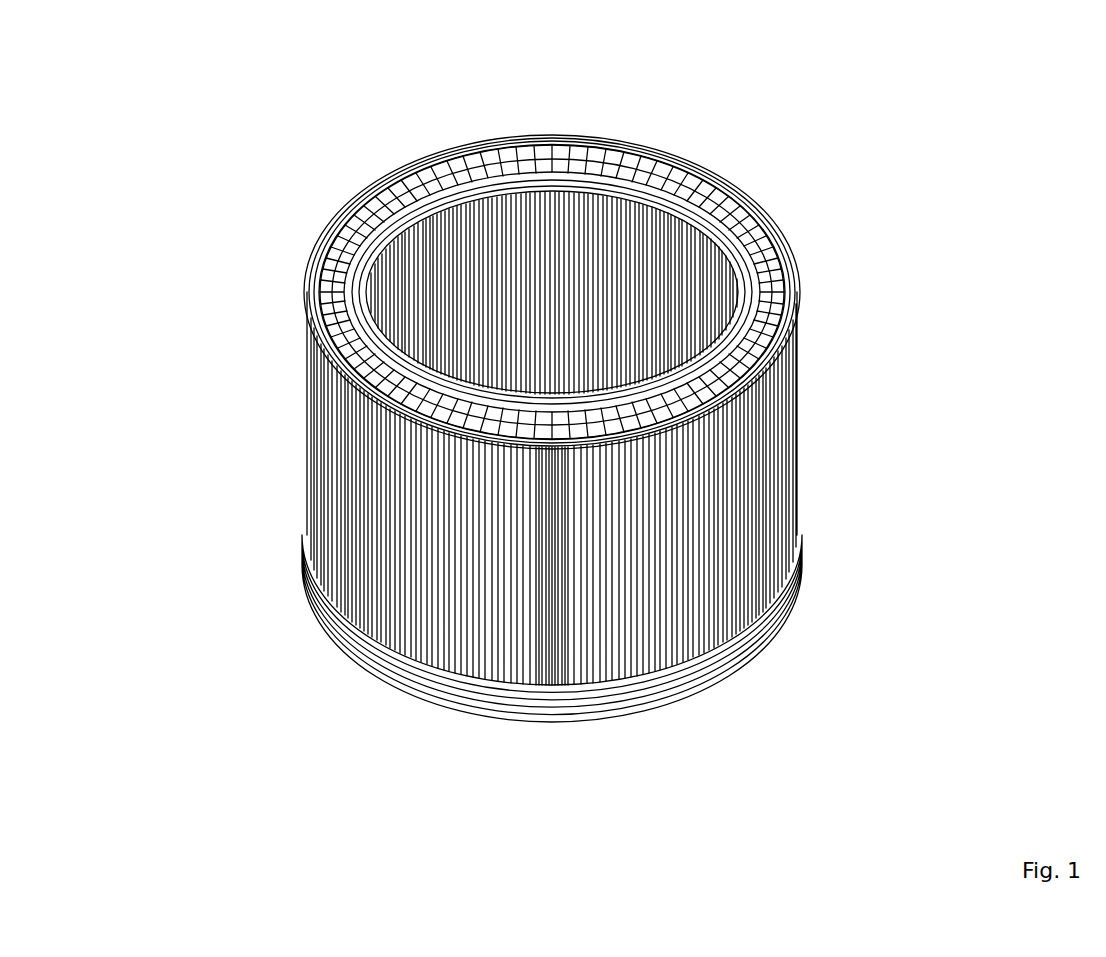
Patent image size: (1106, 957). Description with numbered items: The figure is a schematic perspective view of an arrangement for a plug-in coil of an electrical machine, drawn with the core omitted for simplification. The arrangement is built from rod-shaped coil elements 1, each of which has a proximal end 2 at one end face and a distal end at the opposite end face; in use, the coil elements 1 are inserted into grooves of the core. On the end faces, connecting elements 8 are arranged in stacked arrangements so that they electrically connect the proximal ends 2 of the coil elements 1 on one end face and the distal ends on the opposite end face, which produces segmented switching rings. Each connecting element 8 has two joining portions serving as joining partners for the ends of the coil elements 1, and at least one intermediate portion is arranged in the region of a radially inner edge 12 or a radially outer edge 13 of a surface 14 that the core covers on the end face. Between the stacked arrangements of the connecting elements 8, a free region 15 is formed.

The coil element 1 is at (760, 510).
The proximal end 2 is at (740, 370).
The connecting element 8 is at (385, 177).
The radially inner edge 12 is at (767, 213).
The radially outer edge 13 is at (680, 163).
The surface 14 is at (792, 318).
The free region 15 is at (337, 307).